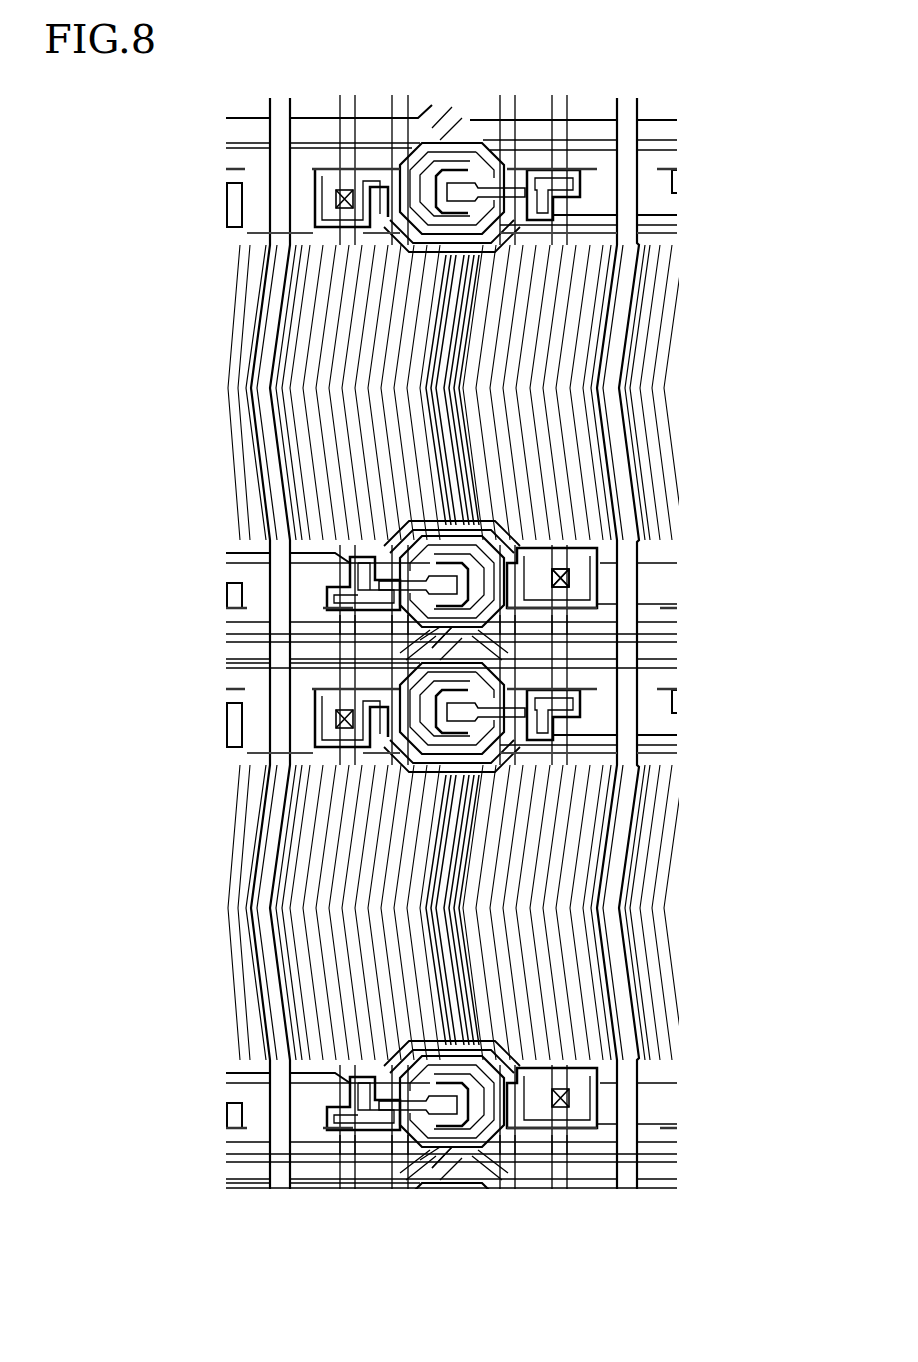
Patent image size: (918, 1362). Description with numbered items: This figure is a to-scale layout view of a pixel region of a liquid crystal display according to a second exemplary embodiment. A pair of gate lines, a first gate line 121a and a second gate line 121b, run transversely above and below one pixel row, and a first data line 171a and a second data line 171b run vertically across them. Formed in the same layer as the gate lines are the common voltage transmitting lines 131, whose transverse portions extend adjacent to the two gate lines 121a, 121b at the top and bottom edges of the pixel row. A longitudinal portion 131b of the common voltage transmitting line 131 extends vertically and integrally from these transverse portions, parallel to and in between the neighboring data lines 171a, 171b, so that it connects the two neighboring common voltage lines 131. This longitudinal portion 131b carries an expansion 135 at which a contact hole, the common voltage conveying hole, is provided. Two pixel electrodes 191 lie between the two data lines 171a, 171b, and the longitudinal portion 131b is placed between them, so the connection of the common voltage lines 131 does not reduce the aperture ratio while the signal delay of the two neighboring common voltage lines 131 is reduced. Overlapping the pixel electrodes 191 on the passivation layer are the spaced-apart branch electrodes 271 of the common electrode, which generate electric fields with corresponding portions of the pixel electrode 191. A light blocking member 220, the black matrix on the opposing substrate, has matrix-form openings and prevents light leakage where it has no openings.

The first data line 171a is at (640, 106).
The second data line 171b is at (292, 106).
The first gate line 121a is at (678, 176).
The second gate line 121b is at (672, 617).
The common voltage transmitting line 131 is at (674, 243).
The longitudinal portion 131b is at (433, 425).
The expansion 135 is at (342, 212).
The pixel electrode 191 is at (290, 478).
The branch electrode 271 is at (325, 345).
The light blocking member 220 is at (573, 550).